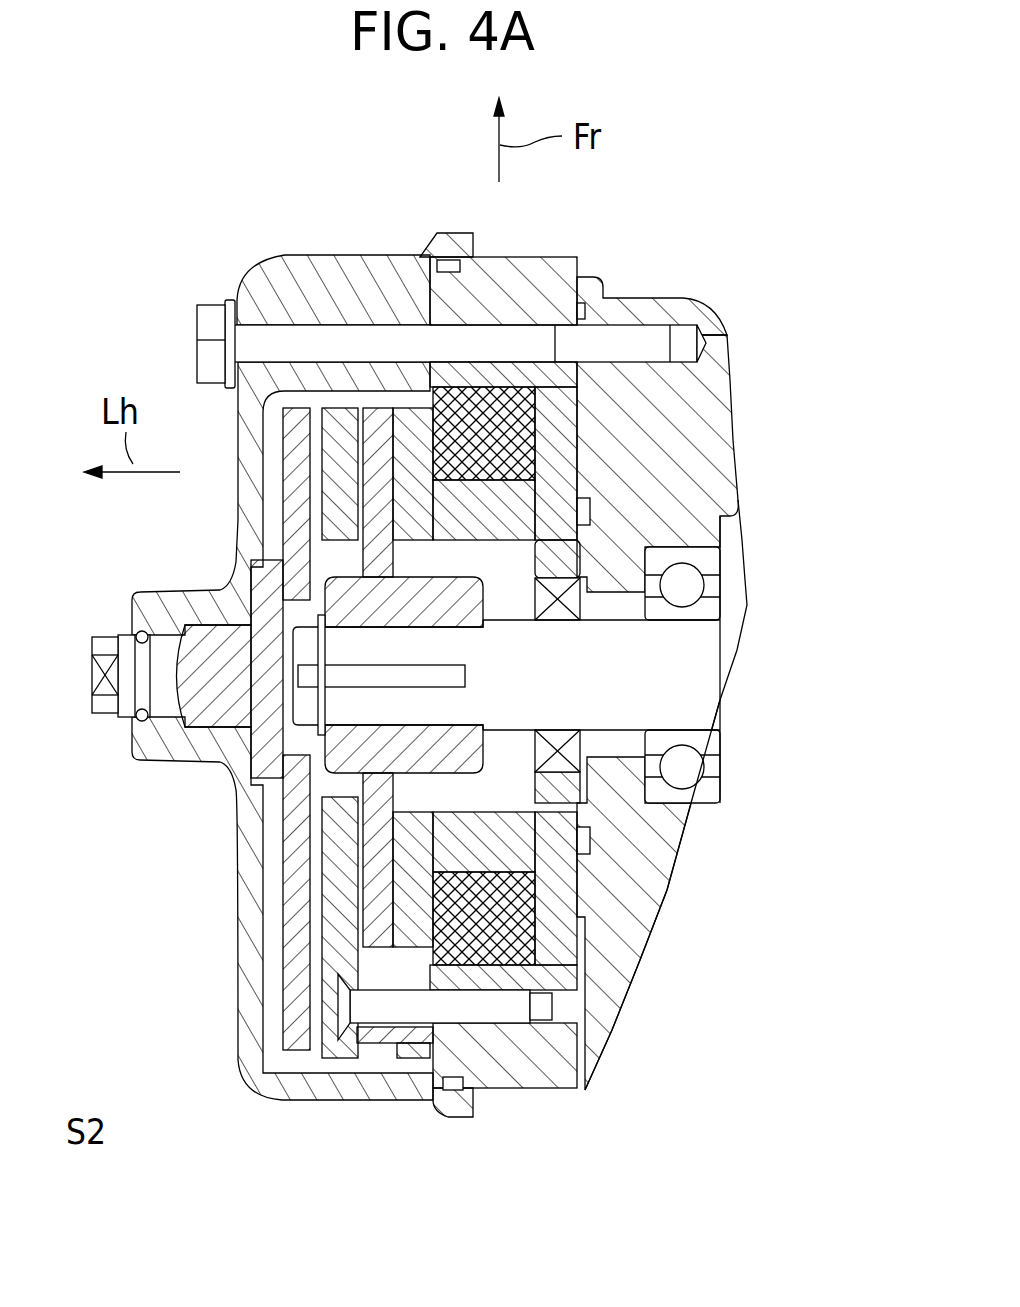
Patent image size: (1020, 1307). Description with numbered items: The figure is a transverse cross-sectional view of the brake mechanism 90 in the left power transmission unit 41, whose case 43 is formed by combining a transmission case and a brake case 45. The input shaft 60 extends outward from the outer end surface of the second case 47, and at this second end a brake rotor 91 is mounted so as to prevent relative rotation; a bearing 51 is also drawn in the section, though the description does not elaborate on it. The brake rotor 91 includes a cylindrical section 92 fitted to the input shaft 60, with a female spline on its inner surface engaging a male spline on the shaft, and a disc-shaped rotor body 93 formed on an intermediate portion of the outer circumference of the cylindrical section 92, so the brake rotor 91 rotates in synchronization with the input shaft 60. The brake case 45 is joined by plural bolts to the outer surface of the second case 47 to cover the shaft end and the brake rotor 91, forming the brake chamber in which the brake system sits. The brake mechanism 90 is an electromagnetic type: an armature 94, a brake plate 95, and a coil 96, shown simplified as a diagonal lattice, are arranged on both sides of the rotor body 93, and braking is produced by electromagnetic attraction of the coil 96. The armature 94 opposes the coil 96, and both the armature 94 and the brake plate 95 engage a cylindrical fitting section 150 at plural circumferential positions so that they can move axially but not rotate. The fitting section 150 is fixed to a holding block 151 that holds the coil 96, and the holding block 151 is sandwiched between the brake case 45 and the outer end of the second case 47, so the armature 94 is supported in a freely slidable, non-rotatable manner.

The power transmission unit 41 is at (556, 1122).
The case 43 is at (613, 293).
The brake case 45 is at (388, 258).
The second case 47 is at (663, 307).
The bearing 51 is at (682, 585).
The input shaft 60 is at (618, 690).
The brake mechanism 90 is at (372, 889).
The brake rotor 91 is at (377, 420).
The cylindrical section 92 is at (345, 577).
The rotor body 93 is at (380, 467).
The armature 94 is at (415, 445).
The brake plate 95 is at (330, 477).
The coil 96 is at (522, 437).
The fitting section 150 is at (378, 1050).
The holding block 151 is at (558, 970).